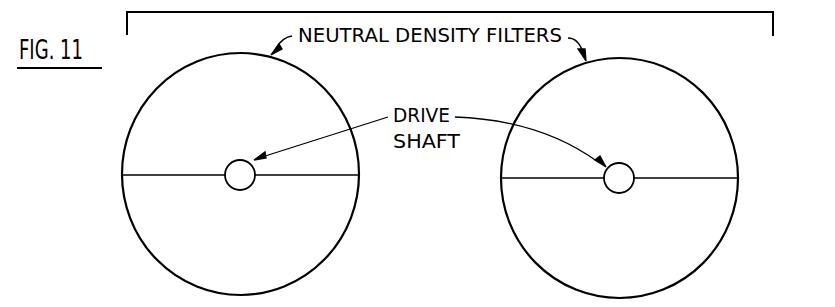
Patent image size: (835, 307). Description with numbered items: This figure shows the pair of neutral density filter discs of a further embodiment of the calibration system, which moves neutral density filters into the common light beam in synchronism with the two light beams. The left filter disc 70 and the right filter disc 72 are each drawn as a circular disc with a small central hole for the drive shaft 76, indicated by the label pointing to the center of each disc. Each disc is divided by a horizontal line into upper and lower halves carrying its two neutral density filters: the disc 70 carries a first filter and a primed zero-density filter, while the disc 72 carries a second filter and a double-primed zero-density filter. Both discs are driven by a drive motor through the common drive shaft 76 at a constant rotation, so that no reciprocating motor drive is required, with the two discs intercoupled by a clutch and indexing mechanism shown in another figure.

The filter disc 70 is at (333, 227).
The filter disc 72 is at (722, 207).
The drive shaft 76 is at (239, 178).